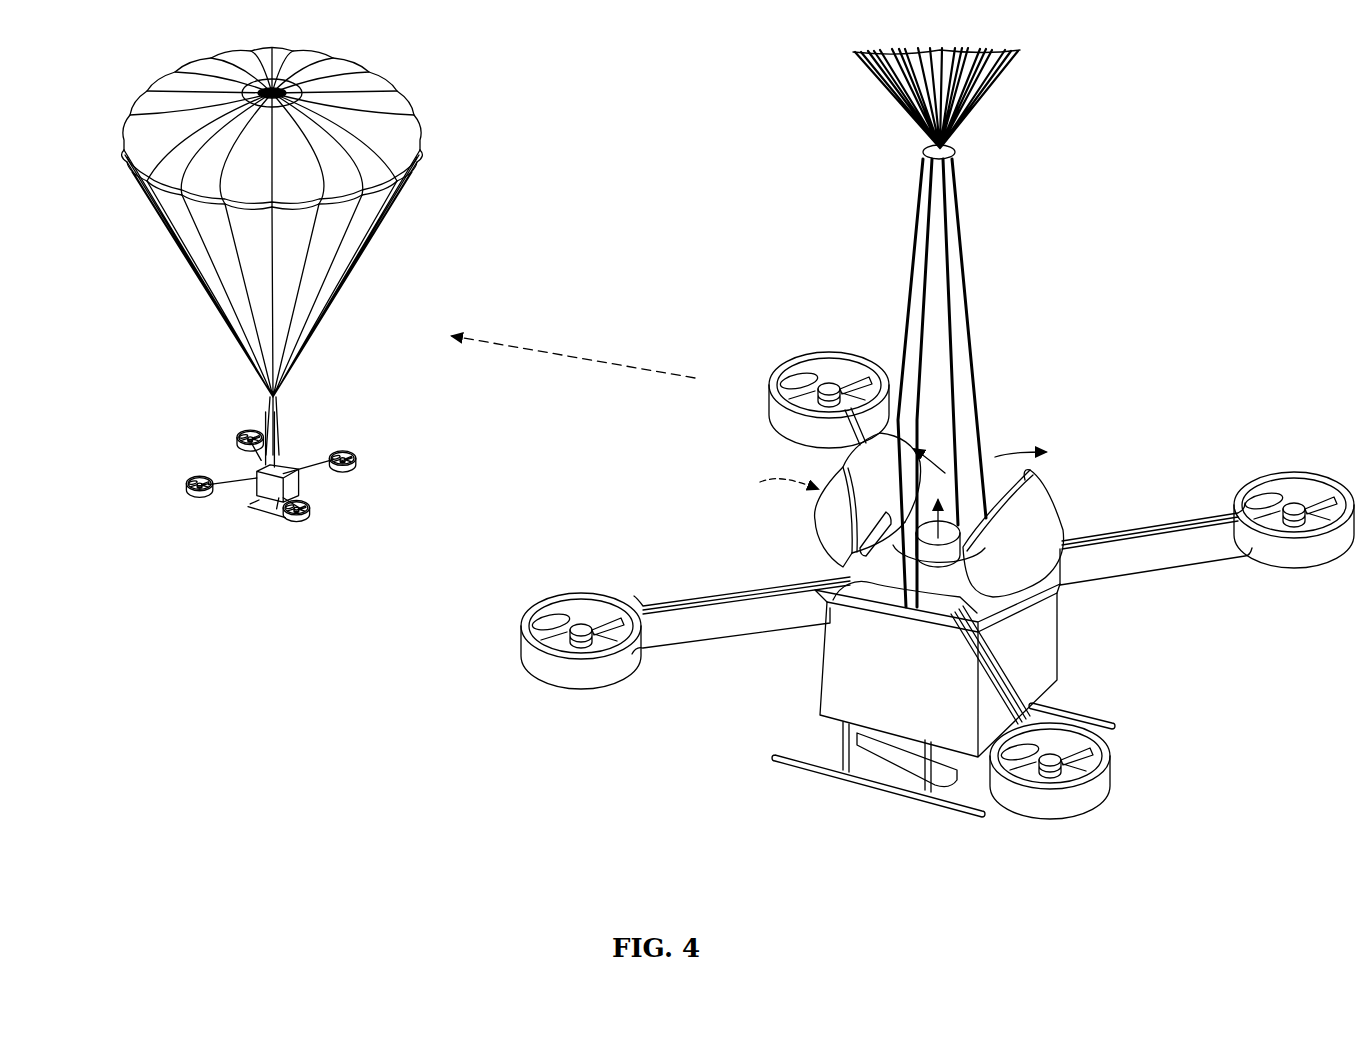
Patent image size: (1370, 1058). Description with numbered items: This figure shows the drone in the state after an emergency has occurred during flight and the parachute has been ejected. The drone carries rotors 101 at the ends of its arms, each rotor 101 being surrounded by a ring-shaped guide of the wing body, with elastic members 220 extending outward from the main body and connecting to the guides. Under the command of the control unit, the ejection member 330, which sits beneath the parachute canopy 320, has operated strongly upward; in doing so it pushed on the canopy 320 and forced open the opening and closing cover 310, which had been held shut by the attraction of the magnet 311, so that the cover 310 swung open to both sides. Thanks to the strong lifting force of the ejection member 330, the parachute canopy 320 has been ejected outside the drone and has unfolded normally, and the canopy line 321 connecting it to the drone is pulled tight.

The rotor 101 is at (937, 585).
The elastic member 220 is at (742, 640).
The opening and closing cover 310 is at (960, 442).
The magnet 311 is at (916, 444).
The parachute canopy 320 is at (393, 122).
The canopy line 321 is at (227, 323).
The ejection member 330 is at (925, 580).